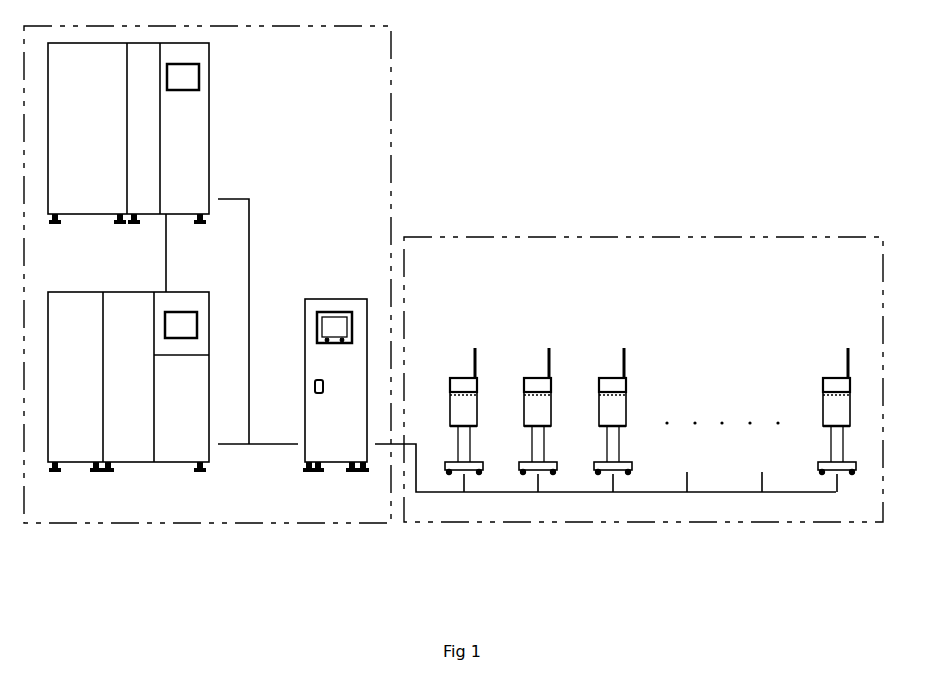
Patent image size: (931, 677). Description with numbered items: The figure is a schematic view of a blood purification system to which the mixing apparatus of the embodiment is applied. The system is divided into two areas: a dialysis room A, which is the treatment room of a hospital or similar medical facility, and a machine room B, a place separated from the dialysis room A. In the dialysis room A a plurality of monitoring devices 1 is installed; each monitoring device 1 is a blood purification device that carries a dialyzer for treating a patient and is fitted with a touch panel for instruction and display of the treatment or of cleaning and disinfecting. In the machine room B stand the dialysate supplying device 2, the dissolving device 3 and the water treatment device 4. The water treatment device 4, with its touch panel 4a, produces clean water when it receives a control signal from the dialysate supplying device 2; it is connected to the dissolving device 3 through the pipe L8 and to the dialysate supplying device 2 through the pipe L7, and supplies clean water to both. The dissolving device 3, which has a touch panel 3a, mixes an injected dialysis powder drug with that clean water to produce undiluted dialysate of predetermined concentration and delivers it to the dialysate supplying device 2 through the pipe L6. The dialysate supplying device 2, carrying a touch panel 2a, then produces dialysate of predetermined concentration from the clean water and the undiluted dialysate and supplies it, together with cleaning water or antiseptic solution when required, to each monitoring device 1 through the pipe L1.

The monitoring device 1 is at (458, 375).
The dialysate supplying device 2 is at (336, 363).
The touch panel 2a is at (337, 312).
The dissolving device 3 is at (128, 358).
The touch panel 3a is at (182, 312).
The water treatment device 4 is at (154, 133).
The touch panel 4a is at (205, 76).
The dialysis room A is at (632, 237).
The machine room B is at (393, 90).
The pipe L1 is at (516, 495).
The pipe L6 is at (252, 448).
The pipe L7 is at (248, 258).
The pipe L8 is at (166, 262).